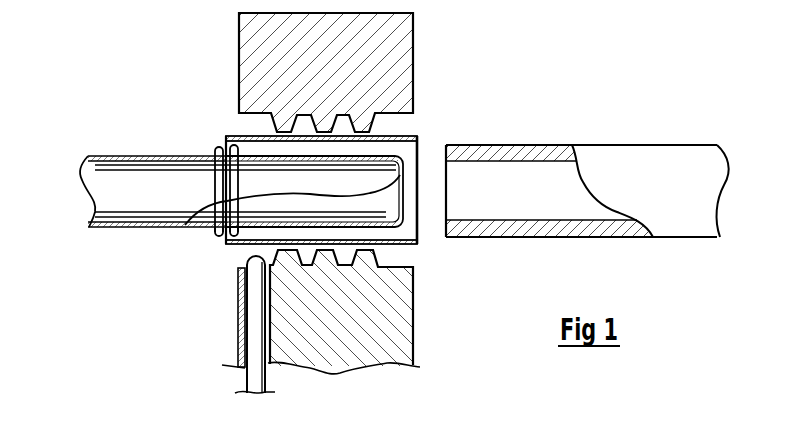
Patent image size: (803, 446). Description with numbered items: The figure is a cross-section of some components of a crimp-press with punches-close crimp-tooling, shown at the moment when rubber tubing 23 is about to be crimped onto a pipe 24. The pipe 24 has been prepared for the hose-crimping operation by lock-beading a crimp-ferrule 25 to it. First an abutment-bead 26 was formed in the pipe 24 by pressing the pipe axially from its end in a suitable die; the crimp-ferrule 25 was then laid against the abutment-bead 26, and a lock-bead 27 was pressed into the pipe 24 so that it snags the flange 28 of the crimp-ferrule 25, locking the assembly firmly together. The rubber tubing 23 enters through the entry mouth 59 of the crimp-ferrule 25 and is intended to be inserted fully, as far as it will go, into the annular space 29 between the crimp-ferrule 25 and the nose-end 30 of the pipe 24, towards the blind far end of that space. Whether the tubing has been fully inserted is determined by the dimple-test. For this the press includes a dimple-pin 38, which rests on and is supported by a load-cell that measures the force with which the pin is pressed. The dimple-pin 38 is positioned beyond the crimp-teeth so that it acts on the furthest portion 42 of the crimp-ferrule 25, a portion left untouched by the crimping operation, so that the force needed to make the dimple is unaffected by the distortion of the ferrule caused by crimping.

The rubber tubing 23 is at (602, 153).
The pipe 24 is at (116, 155).
The crimp-ferrule 25 is at (416, 136).
The abutment-bead 26 is at (217, 148).
The lock-bead 27 is at (245, 140).
The flange 28 is at (222, 242).
The annular space 29 is at (340, 153).
The nose-end 30 is at (380, 222).
The dimple-pin 38 is at (258, 377).
The furthest portion 42 is at (228, 246).
The entry mouth 59 is at (417, 202).